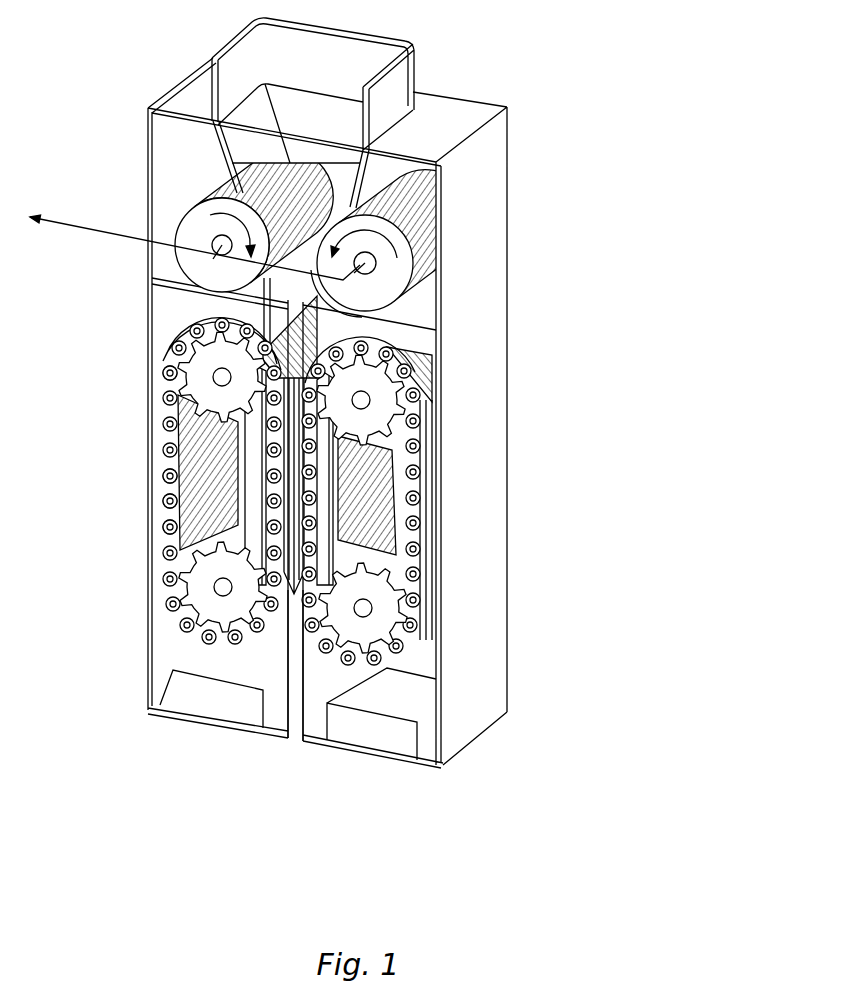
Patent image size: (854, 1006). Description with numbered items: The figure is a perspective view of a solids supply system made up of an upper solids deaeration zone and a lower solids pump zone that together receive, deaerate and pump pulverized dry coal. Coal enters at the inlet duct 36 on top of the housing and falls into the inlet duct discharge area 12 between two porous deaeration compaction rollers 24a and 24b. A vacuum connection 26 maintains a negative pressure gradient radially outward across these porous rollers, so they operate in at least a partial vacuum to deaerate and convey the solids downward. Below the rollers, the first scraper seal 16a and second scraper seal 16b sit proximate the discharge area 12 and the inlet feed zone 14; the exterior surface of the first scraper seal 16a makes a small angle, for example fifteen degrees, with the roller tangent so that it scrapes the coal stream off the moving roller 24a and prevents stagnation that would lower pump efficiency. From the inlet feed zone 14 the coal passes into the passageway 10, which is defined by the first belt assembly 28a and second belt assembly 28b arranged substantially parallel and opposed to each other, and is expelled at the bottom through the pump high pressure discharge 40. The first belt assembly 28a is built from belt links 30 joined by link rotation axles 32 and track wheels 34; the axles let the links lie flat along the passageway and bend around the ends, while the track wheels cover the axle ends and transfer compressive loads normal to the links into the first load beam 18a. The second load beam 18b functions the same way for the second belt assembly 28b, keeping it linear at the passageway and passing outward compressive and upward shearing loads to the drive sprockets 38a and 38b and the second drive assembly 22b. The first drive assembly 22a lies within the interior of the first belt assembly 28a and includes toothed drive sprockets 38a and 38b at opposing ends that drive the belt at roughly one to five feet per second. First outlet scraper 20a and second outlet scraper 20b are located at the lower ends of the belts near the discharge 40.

The passageway 10 is at (286, 588).
The inlet duct discharge area 12 is at (293, 201).
The inlet feed zone 14 is at (410, 312).
The first scraper seal 16a is at (178, 285).
The second scraper seal 16b is at (412, 343).
The first load beam 18a is at (183, 507).
The second load beam 18b is at (398, 535).
The first outlet scraper 20a is at (200, 667).
The second outlet scraper 20b is at (383, 700).
The first drive assembly 22a is at (245, 565).
The second drive assembly 22b is at (390, 627).
The porous deaeration compaction roller 24a is at (196, 225).
The porous deaeration compaction roller 24b is at (410, 260).
The vacuum connection 26 is at (78, 228).
The first belt assembly 28a is at (163, 450).
The second belt assembly 28b is at (405, 362).
The belt links 30 is at (168, 490).
The link rotation axles 32 is at (162, 517).
The track wheels 34 is at (165, 376).
The inlet duct 36 is at (398, 90).
The drive sprocket 38a is at (175, 342).
The drive sprocket 38b is at (182, 622).
The pump high pressure discharge 40 is at (292, 748).